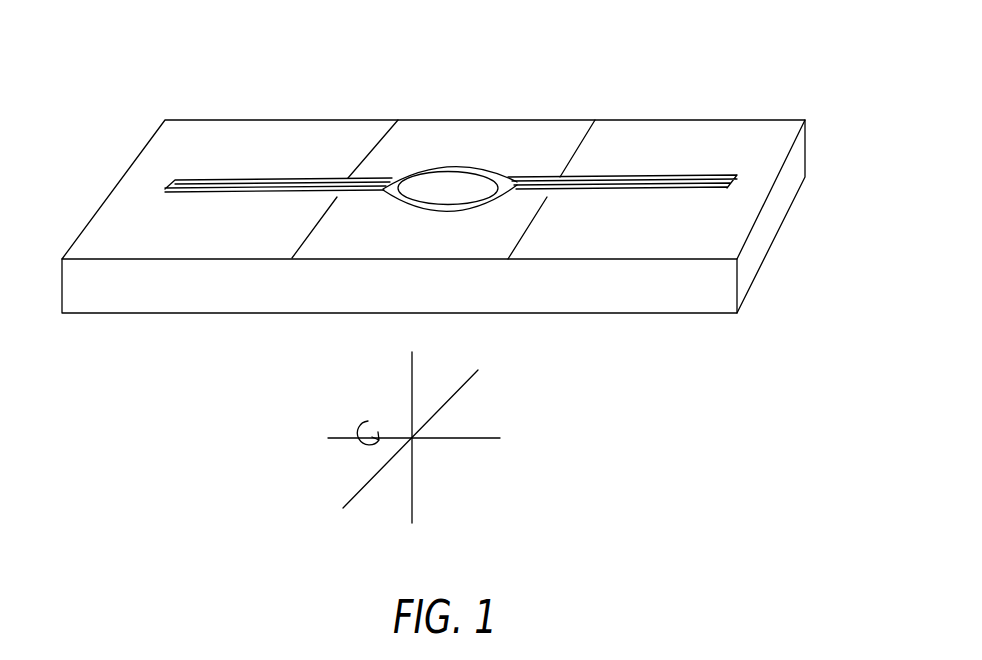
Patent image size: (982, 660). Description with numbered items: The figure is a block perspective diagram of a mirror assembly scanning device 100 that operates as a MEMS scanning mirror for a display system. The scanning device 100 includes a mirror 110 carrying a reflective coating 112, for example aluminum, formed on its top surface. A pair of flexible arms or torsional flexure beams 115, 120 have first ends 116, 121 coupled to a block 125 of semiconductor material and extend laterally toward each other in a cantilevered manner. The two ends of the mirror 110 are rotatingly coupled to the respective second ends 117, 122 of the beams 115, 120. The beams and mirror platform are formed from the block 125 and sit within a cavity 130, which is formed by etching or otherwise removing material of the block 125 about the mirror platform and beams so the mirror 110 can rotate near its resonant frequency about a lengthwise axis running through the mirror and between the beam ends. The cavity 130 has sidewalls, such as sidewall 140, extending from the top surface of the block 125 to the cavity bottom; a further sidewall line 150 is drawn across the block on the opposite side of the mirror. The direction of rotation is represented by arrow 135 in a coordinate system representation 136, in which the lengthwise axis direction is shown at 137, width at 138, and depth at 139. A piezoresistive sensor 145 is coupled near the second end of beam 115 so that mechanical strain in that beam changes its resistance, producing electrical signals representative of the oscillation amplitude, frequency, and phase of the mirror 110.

The scanning device 100 is at (687, 58).
The mirror 110 is at (456, 171).
The reflective coating 112 is at (427, 168).
The torsional flexure beam 115 is at (582, 175).
The first end 116 is at (688, 189).
The second end 117 is at (517, 195).
The torsional flexure beam 120 is at (253, 181).
The first end 121 is at (183, 196).
The second end 122 is at (392, 197).
The block 125 is at (200, 120).
The cavity 130 is at (517, 177).
The arrow 135 is at (367, 423).
The coordinate system representation 136 is at (476, 436).
The lengthwise axis direction 137 is at (470, 439).
The width direction 138 is at (459, 392).
The depth direction 139 is at (413, 502).
The sidewall 140 is at (388, 177).
The piezoresistive sensor 145 is at (737, 179).
The second cross-section line 150 is at (520, 241).